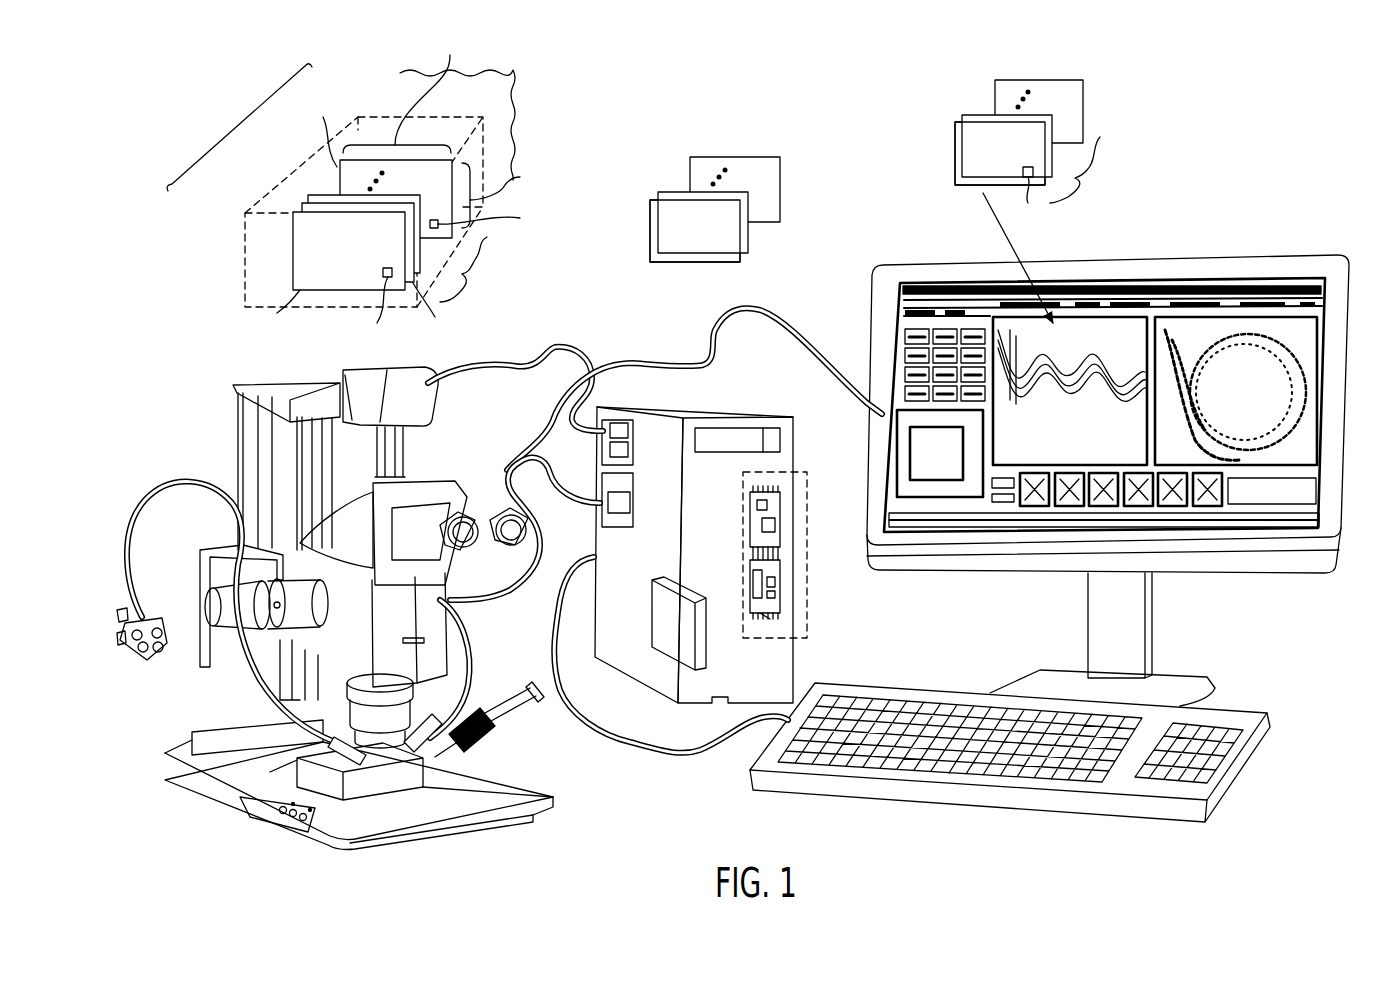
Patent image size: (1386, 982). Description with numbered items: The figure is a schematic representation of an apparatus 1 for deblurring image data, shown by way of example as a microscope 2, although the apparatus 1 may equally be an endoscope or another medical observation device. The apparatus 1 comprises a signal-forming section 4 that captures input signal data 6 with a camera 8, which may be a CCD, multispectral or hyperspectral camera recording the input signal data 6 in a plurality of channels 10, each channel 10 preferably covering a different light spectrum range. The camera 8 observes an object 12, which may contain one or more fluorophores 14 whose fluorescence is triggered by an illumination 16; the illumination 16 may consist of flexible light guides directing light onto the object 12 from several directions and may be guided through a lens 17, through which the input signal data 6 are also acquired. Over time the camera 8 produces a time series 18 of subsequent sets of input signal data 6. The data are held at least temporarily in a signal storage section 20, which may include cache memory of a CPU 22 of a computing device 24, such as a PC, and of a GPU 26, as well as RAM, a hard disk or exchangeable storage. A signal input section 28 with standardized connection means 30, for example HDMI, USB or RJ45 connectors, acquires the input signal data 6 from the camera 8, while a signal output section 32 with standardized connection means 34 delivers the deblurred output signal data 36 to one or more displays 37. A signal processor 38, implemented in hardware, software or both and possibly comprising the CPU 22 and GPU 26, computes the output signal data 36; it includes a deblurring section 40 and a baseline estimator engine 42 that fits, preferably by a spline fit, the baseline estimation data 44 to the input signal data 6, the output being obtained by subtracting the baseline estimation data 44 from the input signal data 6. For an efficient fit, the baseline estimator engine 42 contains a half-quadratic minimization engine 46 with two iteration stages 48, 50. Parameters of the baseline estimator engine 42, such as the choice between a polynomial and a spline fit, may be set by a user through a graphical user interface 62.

The apparatus 1 is at (1298, 765).
The microscope 2 is at (733, 449).
The signal-forming section 4 is at (478, 632).
The input signal data 6 is at (290, 177).
The camera 8 is at (373, 373).
The channel 10 is at (293, 255).
The object 12 is at (307, 778).
The fluorophore 14 is at (487, 741).
The illumination 16 is at (476, 668).
The lens 17 is at (363, 717).
The time series 18 is at (606, 192).
The signal storage section 20 is at (683, 597).
The CPU 22 is at (770, 508).
The computing device 24 is at (757, 415).
The GPU 26 is at (780, 598).
The signal input section 28 is at (625, 486).
The standardized connection means 30 is at (622, 508).
The signal output section 32 is at (636, 429).
The standardized connection means 34 is at (623, 449).
The output signal data 36 is at (942, 125).
The display 37 is at (1293, 257).
The signal processor 38 is at (807, 638).
The deblurring section 40 is at (773, 527).
The baseline estimator engine 42 is at (758, 502).
The baseline estimation data 44 is at (636, 254).
The half-quadratic minimization engine 46 is at (770, 613).
The first iteration stage 48 is at (753, 575).
The second iteration stage 50 is at (750, 597).
The graphical user interface 62 is at (1249, 486).